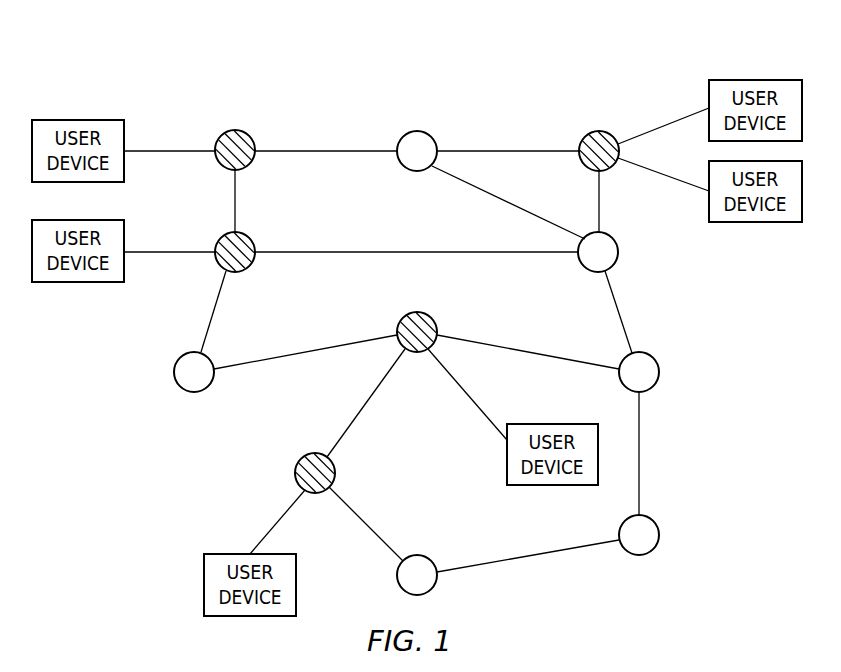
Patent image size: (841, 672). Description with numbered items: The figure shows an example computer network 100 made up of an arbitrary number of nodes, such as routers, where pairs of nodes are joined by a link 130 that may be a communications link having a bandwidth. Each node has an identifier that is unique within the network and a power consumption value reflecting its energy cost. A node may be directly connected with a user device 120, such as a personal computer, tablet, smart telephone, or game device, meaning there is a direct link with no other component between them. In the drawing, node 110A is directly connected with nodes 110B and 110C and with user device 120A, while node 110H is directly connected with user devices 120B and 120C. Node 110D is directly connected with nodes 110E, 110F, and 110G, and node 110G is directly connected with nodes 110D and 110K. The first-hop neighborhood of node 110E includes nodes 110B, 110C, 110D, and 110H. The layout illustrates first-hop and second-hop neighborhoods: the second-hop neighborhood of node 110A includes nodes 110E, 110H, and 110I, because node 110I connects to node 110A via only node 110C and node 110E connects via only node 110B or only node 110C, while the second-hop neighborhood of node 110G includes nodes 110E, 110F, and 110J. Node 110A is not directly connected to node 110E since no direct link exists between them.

The computer network 100 is at (274, 66).
The node 110A is at (232, 128).
The node 110B is at (414, 130).
The node 110C is at (247, 272).
The node 110D is at (660, 373).
The node 110E is at (619, 253).
The node 110F is at (411, 312).
The node 110G is at (640, 556).
The node 110H is at (596, 130).
The node 110I is at (190, 393).
The node 110J is at (304, 458).
The node 110K is at (397, 576).
The user device 120 is at (76, 283).
The user device 120A is at (78, 120).
The user device 120B is at (755, 80).
The user device 120C is at (755, 222).
The link 130 is at (180, 150).